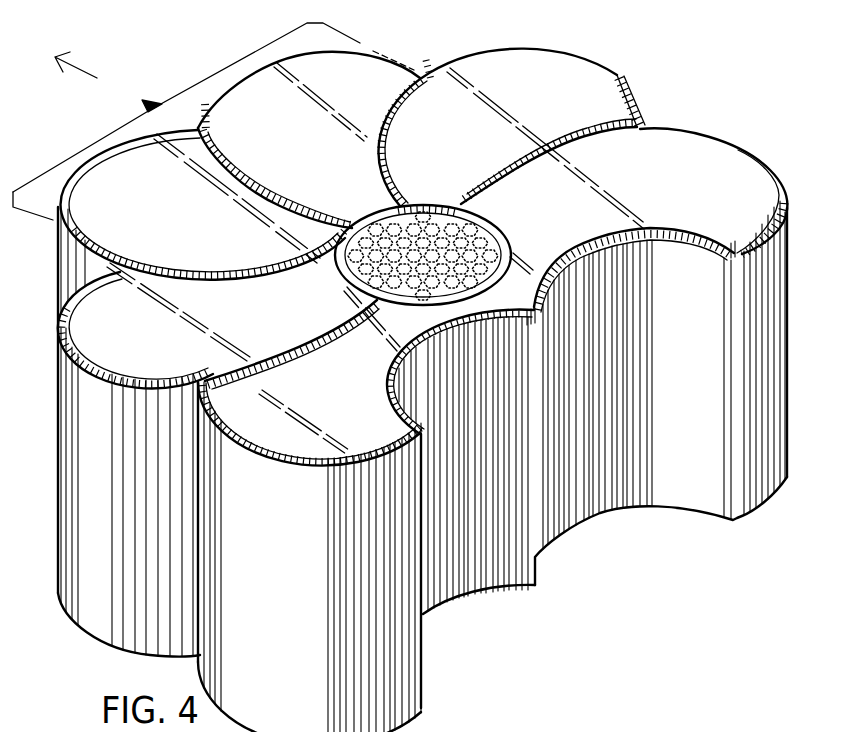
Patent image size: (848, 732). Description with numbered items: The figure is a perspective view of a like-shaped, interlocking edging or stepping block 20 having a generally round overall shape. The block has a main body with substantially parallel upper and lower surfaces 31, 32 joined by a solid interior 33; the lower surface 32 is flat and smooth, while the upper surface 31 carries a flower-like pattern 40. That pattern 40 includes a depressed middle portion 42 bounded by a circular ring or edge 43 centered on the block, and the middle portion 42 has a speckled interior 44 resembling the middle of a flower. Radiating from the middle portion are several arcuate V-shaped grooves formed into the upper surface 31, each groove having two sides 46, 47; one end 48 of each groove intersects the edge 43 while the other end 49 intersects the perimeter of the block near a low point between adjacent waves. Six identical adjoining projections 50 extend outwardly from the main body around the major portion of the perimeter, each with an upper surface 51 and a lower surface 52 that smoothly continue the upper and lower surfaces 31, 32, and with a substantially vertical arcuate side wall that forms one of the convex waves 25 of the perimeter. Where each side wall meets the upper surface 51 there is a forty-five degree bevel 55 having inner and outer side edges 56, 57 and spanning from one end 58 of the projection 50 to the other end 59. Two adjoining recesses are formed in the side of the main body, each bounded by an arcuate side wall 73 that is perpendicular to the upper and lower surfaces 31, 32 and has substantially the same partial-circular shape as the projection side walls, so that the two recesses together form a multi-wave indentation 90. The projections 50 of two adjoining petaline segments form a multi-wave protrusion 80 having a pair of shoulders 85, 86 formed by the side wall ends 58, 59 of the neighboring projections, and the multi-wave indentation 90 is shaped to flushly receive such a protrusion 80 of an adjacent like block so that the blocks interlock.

The edging or stepping block 20 is at (669, 109).
The convex shaped wave 25 is at (318, 52).
The upper surface 31 is at (226, 253).
The lower surface 32 is at (467, 600).
The solid interior 33 is at (493, 595).
The pattern 40 is at (299, 150).
The depressed middle portion 42 is at (462, 222).
The circular ring or edge 43 is at (462, 240).
The speckled interior 44 is at (482, 253).
The side of groove 46 is at (397, 100).
The side of groove 47 is at (385, 158).
The end of groove 48 is at (397, 204).
The end of groove 49 is at (418, 77).
The projection 50 is at (263, 80).
The upper surface of projection 51 is at (139, 195).
The lower surface of projection 52 is at (62, 598).
The bevel 55 is at (60, 310).
The inner side edge of bevel 56 is at (60, 330).
The outer side edge of bevel 57 is at (88, 380).
The end of projection 58 is at (203, 128).
The end of projection 59 is at (415, 73).
The side wall of recess 73 is at (701, 373).
The multi-wave protrusion 80 is at (145, 103).
The shoulder 85 is at (432, 77).
The shoulder 86 is at (62, 248).
The multi-wave indentation 90 is at (672, 489).